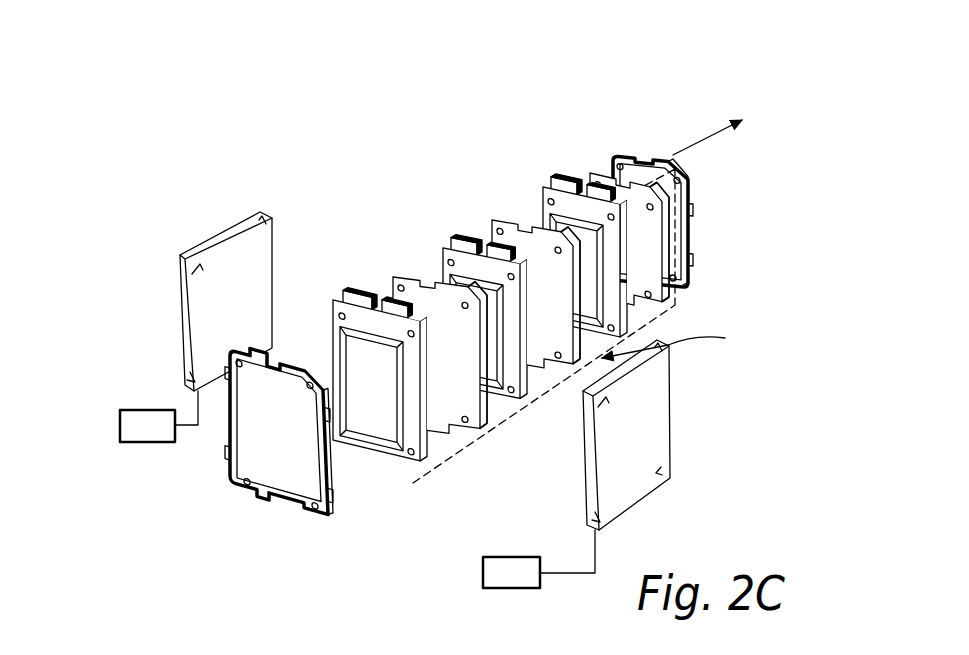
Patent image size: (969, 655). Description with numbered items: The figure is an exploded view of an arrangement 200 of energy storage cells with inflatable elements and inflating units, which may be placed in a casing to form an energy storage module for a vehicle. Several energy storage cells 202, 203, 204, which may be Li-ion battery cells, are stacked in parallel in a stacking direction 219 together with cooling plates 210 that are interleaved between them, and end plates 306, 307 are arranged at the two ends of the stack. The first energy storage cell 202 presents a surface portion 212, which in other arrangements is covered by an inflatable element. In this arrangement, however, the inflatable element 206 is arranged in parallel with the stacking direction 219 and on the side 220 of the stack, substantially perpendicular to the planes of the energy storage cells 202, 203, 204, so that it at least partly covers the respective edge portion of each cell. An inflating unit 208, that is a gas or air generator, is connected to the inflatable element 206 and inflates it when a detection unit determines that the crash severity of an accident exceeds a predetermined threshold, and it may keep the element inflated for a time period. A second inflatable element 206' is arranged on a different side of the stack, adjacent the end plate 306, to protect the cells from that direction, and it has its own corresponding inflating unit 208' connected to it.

The arrangement 200 is at (424, 266).
The energy storage cell 202 is at (353, 303).
The energy storage cell 203 is at (443, 257).
The energy storage cell 204 is at (543, 205).
The inflatable element 206 is at (674, 435).
The second inflatable element 206' is at (163, 301).
The inflating unit 208 is at (494, 567).
The inflating unit 208' is at (110, 422).
The cooling plate 210 is at (647, 231).
The surface portion 212 is at (376, 355).
The stacking direction 219 is at (722, 121).
The side 220 is at (686, 340).
The end plate 306 is at (262, 466).
The end plate 307 is at (690, 206).